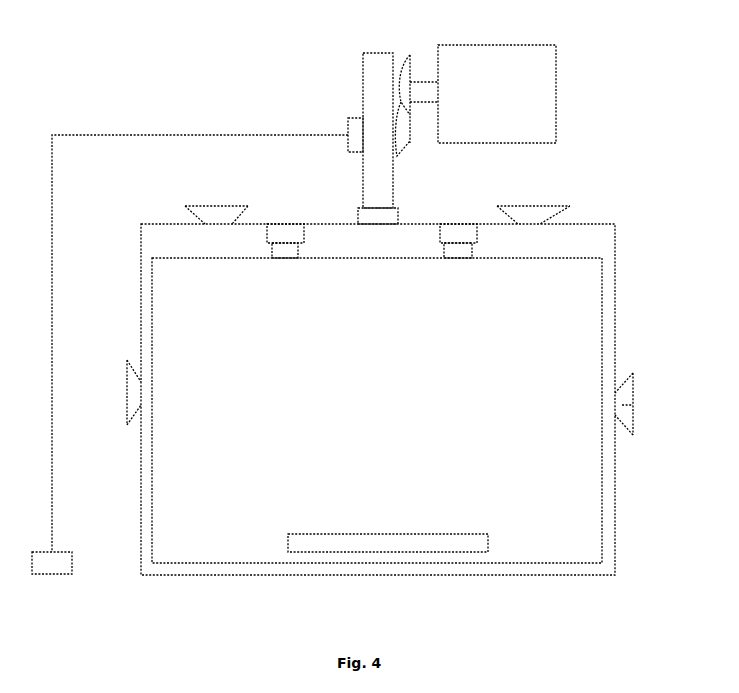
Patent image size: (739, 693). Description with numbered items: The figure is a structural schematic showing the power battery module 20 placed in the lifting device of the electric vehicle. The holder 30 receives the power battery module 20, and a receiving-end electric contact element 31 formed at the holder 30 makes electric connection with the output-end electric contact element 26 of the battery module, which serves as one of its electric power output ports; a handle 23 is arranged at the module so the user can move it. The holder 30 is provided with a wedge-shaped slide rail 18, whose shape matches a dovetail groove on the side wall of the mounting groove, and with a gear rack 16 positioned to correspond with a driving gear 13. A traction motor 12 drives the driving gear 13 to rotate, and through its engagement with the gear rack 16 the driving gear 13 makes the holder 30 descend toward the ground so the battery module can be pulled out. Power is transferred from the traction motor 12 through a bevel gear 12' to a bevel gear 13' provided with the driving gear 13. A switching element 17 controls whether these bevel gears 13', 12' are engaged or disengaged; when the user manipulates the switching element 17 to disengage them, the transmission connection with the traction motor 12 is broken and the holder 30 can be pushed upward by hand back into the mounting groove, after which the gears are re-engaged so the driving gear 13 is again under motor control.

The traction motor 12 is at (516, 94).
The bevel gear 12' is at (433, 82).
The driving gear 13 is at (338, 130).
The bevel gear 13' is at (429, 142).
The gear rack 16 is at (398, 218).
The switching element 17 is at (66, 562).
The wedge-shaped slide rail 18 is at (560, 208).
The power battery module 20 is at (602, 350).
The handle 23 is at (488, 550).
The output-end electric contact element 26 is at (298, 250).
The holder 30 is at (615, 308).
The receiving-end electric contact element 31 is at (263, 237).